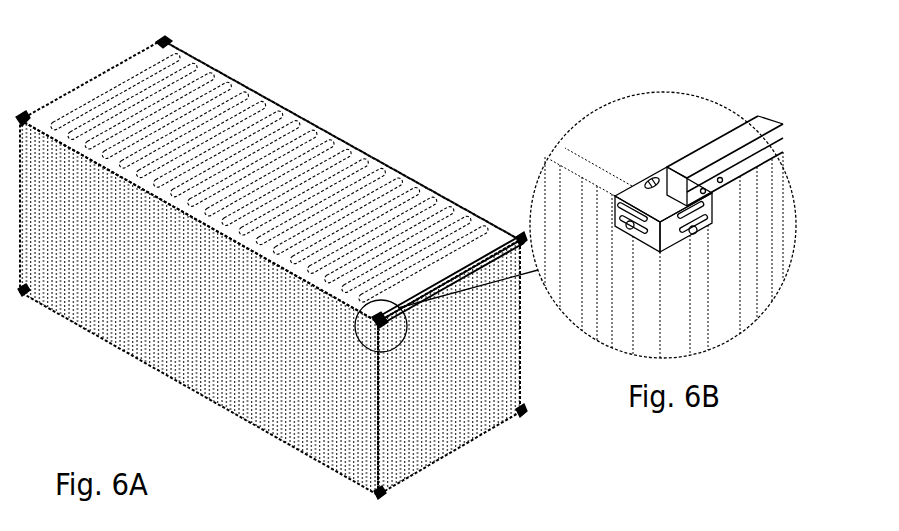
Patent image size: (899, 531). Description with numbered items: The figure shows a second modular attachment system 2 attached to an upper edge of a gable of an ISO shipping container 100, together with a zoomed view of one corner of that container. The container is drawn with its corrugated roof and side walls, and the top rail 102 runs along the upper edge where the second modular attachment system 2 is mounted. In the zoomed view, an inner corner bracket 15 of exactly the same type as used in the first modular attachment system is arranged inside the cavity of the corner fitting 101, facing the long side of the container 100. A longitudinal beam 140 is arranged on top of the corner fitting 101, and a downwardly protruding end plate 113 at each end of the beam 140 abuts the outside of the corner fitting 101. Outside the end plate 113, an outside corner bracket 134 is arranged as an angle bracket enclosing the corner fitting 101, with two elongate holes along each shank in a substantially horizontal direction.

In FIG. 6A, the ISO shipping container 100 is at (93, 313).
In FIG. 6A, the corner fitting 101 is at (172, 43).
In FIG. 6A, the top side rail 102 is at (305, 119).
In FIG. 6A, the second modular attachment system 2 is at (470, 262).
In FIG. 6B, the inner corner bracket 15 is at (661, 174).
In FIG. 6B, the longitudinal beam 140 is at (747, 140).
In FIG. 6B, the outside corner bracket 134 is at (707, 212).
In FIG. 6B, the end plate 113 is at (643, 243).